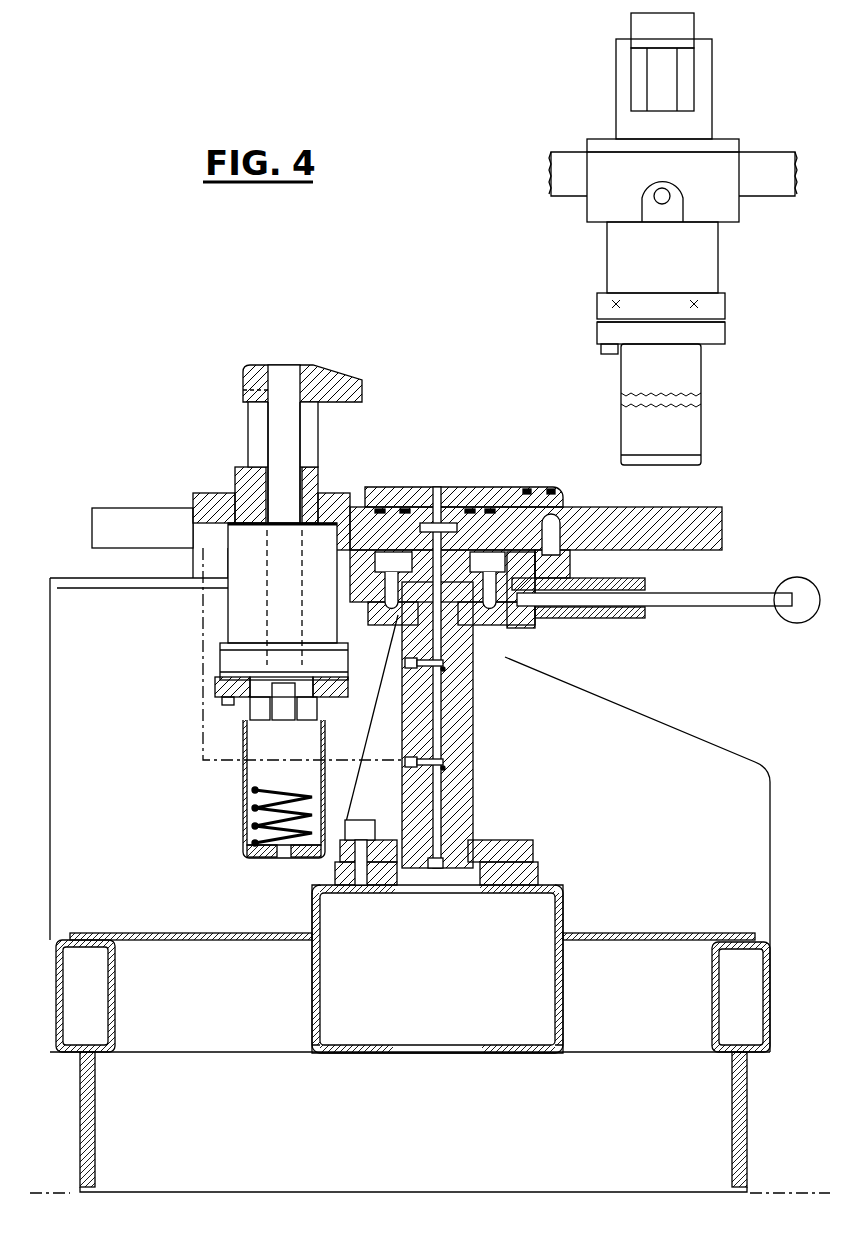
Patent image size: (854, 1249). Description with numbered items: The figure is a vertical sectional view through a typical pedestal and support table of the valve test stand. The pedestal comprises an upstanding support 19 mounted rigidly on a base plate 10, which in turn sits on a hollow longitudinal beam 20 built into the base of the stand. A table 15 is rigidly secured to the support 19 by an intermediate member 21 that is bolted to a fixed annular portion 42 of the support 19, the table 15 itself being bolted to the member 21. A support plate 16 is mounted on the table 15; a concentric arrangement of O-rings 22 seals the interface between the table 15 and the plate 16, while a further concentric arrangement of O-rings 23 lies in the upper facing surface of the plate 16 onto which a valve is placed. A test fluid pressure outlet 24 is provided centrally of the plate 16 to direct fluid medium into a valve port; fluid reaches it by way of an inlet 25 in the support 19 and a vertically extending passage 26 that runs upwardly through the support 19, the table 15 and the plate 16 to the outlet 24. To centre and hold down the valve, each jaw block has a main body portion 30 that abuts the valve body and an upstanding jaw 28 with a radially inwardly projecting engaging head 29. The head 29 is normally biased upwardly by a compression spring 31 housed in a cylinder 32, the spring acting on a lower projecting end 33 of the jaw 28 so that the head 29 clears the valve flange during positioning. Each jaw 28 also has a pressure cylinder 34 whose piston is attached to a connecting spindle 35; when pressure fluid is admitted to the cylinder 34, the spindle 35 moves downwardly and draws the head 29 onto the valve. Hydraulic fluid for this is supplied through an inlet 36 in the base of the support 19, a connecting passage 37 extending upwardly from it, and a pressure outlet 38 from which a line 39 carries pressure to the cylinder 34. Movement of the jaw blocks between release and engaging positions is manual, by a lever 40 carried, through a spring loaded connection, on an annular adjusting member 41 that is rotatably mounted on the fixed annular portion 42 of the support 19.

The base plate 10 is at (637, 932).
The table 15 is at (692, 522).
The support plate 16 is at (493, 490).
The upstanding support 19 is at (452, 733).
The hollow longitudinal beam 20 is at (550, 882).
The intermediate member 21 is at (547, 590).
The O-rings 22 is at (366, 523).
The O-rings 23 is at (551, 490).
The test fluid pressure outlet 24 is at (438, 488).
The inlet 25 is at (405, 666).
The vertically extending passage 26 is at (505, 660).
The upstanding jaw 28 is at (288, 437).
The engaging head 29 is at (338, 376).
The main body portion 30 is at (316, 440).
The compression spring 31 is at (272, 805).
The cylinder 32 is at (243, 742).
The lower projecting end 33 is at (282, 703).
The pressure cylinder 34 is at (252, 623).
The connecting spindle 35 is at (283, 588).
The inlet 36 is at (438, 868).
The connecting passage 37 is at (441, 797).
The pressure outlet 38 is at (403, 767).
The line 39 is at (208, 763).
The manually operated lever 40 is at (742, 606).
The annular adjusting member 41 is at (527, 627).
The fixed annular portion 42 is at (398, 613).